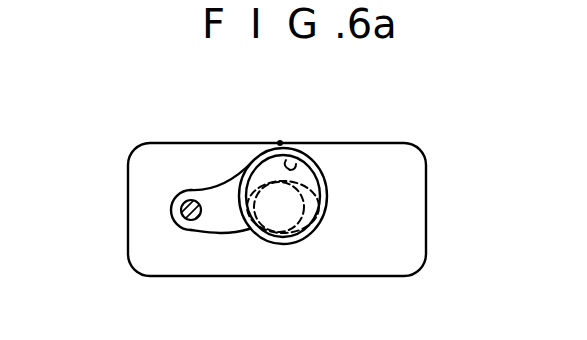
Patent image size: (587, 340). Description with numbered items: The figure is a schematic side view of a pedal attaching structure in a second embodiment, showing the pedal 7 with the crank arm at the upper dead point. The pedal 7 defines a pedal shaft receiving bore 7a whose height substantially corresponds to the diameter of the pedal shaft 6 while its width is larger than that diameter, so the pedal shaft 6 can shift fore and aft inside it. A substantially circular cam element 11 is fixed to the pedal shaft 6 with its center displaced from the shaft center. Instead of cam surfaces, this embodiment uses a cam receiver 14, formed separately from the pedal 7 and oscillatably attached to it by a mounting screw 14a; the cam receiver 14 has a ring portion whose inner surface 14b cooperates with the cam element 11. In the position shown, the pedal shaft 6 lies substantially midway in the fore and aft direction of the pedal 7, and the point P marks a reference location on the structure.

The pedal 7 is at (422, 170).
The pedal shaft receiving bore 7a is at (327, 178).
The pedal shaft 6 is at (323, 210).
The cam receiver 14 is at (222, 218).
The mounting screw 14a is at (181, 210).
The inner surface 14b is at (300, 171).
The cam element 11 is at (264, 168).
The pivot point P is at (281, 143).